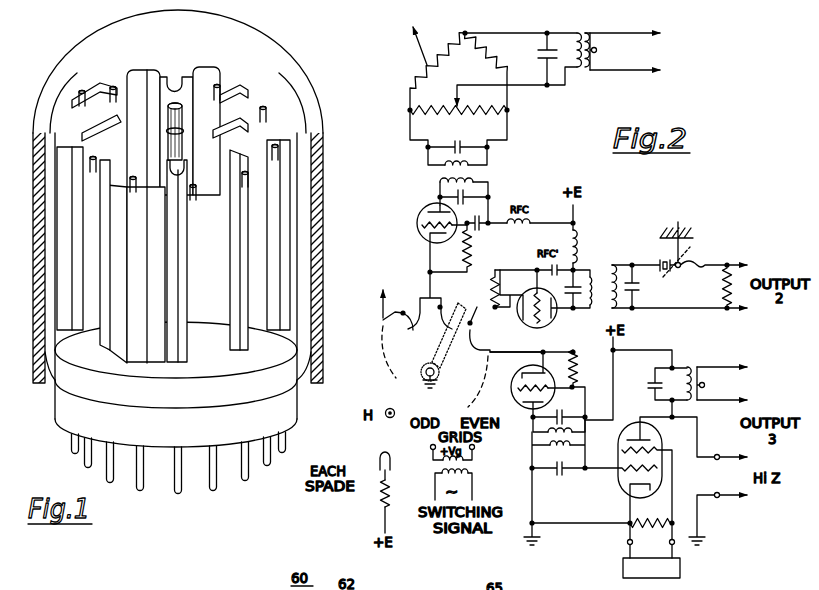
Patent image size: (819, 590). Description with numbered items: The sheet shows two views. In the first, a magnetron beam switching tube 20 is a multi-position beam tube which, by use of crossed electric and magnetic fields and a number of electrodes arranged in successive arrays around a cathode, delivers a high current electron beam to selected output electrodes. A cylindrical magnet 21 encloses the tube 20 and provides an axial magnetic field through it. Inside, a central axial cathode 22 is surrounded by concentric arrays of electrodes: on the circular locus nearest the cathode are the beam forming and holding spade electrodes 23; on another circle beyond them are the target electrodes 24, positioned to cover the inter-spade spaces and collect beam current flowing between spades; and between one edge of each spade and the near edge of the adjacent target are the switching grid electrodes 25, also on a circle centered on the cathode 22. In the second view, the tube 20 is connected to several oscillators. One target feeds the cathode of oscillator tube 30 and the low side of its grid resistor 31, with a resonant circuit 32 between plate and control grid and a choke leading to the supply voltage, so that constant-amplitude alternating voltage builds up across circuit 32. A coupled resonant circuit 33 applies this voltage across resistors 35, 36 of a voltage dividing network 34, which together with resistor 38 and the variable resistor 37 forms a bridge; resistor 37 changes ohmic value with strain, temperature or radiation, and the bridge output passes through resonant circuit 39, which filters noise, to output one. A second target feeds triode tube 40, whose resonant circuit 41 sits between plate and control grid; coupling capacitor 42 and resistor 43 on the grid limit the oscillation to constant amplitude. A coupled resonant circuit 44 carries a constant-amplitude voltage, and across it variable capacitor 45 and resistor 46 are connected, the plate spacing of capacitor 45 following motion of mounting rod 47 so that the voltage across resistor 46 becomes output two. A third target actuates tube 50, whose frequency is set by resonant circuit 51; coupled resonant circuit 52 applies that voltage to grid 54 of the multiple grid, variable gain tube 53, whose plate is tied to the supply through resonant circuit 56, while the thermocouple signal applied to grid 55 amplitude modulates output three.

In FIG. 1, the magnetron beam switching tube 20 is at (353, 188).
In FIG. 2, the magnetron beam switching tube 20 is at (405, 370).
In FIG. 1, the cylindrical magnet 21 is at (324, 128).
In FIG. 1, the central axial cathode 22 is at (183, 118).
In FIG. 2, the central axial cathode 22 is at (420, 380).
In FIG. 1, the spade electrodes 23 is at (173, 80).
In FIG. 2, the spade electrodes 23 is at (413, 327).
In FIG. 1, the target electrodes 24 is at (213, 70).
In FIG. 2, the target electrodes 24 is at (423, 294).
In FIG. 1, the switching grid electrodes 25 is at (115, 87).
In FIG. 2, the switching grid electrodes 25 is at (441, 304).
In FIG. 2, the oscillator tube 30 is at (426, 206).
In FIG. 2, the grid resistor 31 is at (468, 252).
In FIG. 2, the resonant circuit 32 is at (517, 195).
In FIG. 2, the resonant circuit 33 is at (513, 170).
In FIG. 2, the voltage dividing network 34 is at (477, 109).
In FIG. 2, the resistor 35 is at (448, 118).
In FIG. 2, the resistor 36 is at (470, 117).
In FIG. 2, the resistor 37 is at (417, 54).
In FIG. 2, the resistor 38 is at (494, 44).
In FIG. 2, the resonant circuit 39 is at (580, 33).
In FIG. 2, the triode tube 40 is at (556, 323).
In FIG. 2, the resonant circuit 41 is at (585, 299).
In FIG. 2, the coupling capacitor 42 is at (537, 262).
In FIG. 2, the resistor 43 is at (490, 284).
In FIG. 2, the resonant circuit 44 is at (611, 263).
In FIG. 2, the variable capacitor 45 is at (667, 273).
In FIG. 2, the resistor 46 is at (689, 286).
In FIG. 2, the mounting rod 47 is at (684, 246).
In FIG. 2, the tube 50 is at (513, 396).
In FIG. 2, the resonant circuit 51 is at (530, 438).
In FIG. 2, the resonant circuit 52 is at (532, 443).
In FIG. 2, the tube 53 is at (620, 450).
In FIG. 2, the grid 54 is at (601, 470).
In FIG. 2, the grid 55 is at (635, 497).
In FIG. 2, the resonant circuit 56 is at (690, 369).